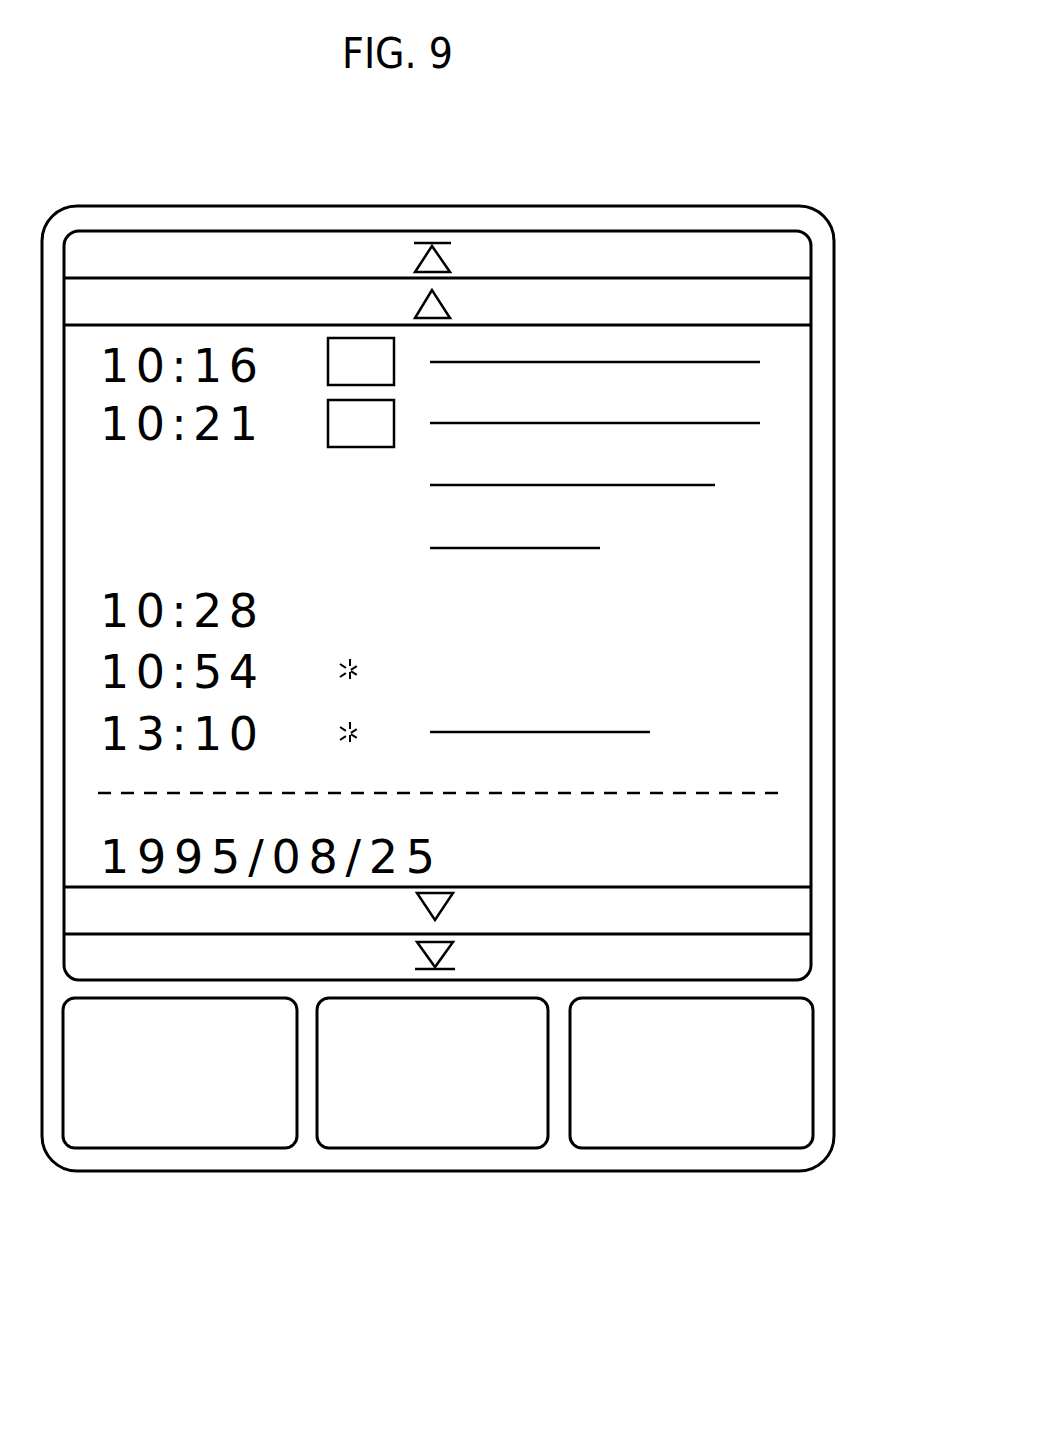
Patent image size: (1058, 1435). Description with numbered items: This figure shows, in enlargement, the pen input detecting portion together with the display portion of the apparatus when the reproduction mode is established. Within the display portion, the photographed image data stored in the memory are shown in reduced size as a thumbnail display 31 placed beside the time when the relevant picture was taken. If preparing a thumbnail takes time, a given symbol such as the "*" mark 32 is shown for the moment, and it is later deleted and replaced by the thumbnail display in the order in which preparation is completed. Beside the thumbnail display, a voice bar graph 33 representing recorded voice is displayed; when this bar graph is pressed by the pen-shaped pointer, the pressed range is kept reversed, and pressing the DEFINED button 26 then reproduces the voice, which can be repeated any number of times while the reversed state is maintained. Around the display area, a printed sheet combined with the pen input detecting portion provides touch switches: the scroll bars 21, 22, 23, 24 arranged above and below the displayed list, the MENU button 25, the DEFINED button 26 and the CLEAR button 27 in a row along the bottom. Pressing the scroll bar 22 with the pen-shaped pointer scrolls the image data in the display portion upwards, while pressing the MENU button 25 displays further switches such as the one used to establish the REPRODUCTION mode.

The scroll bar 21 is at (690, 265).
The scroll bar 22 is at (765, 297).
The scroll bar 23 is at (773, 913).
The scroll bar 24 is at (773, 960).
The MENU button 25 is at (382, 1126).
The DEFINED button 26 is at (612, 1123).
The CLEAR button 27 is at (225, 1128).
The thumbnail display 31 is at (371, 362).
The "*" mark 32 is at (378, 672).
The voice bar graph 33 is at (558, 358).